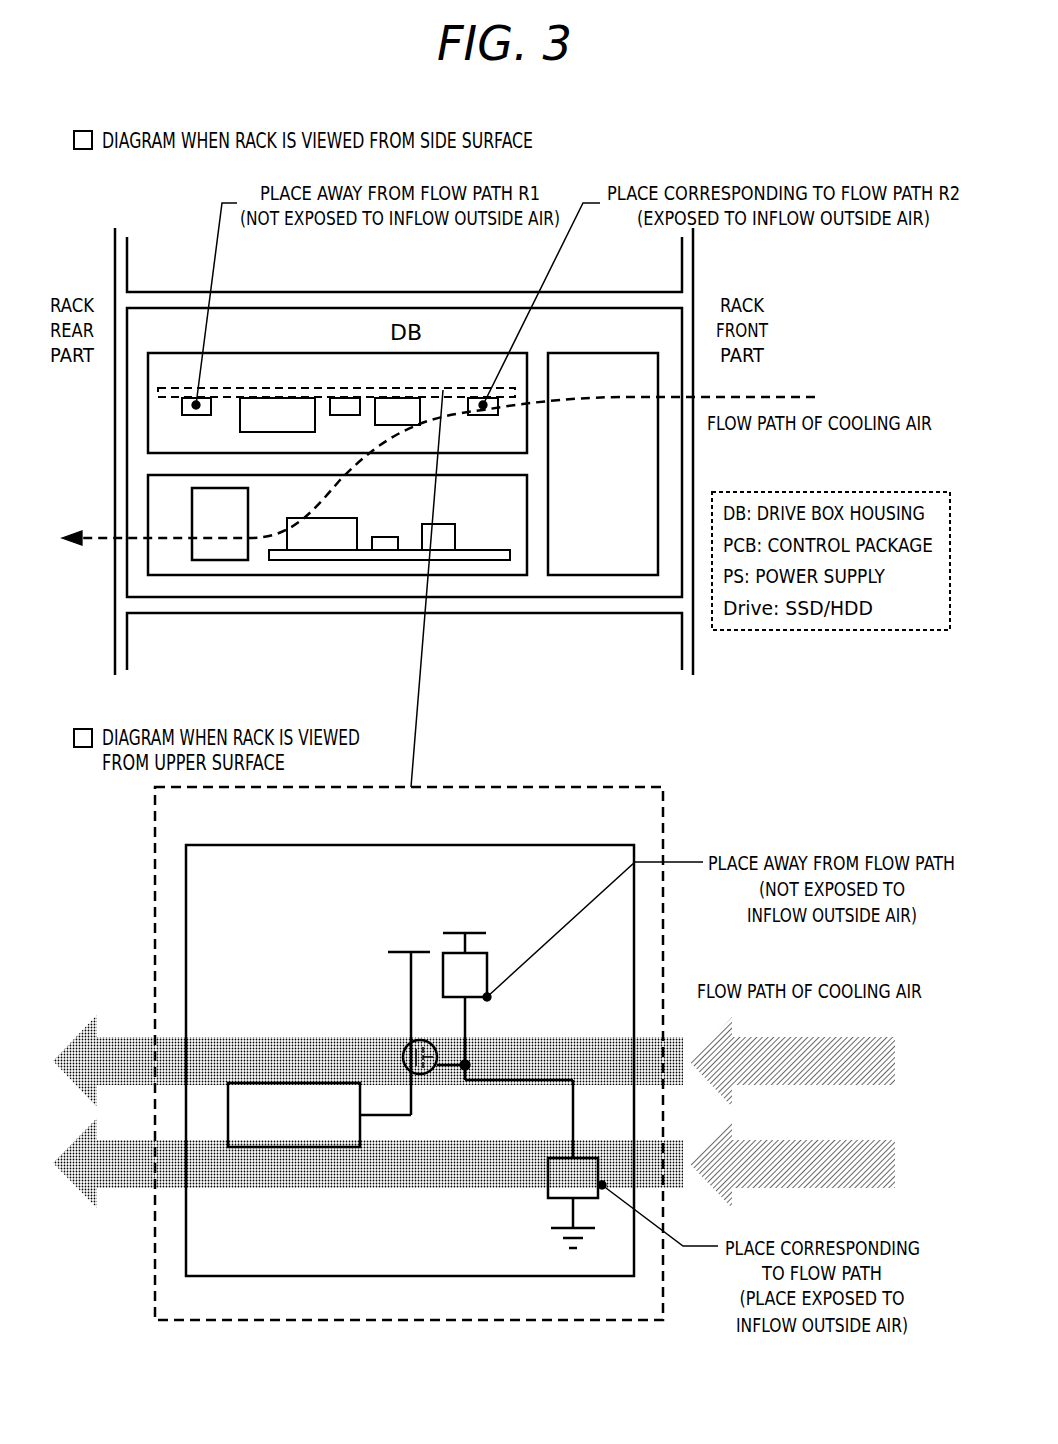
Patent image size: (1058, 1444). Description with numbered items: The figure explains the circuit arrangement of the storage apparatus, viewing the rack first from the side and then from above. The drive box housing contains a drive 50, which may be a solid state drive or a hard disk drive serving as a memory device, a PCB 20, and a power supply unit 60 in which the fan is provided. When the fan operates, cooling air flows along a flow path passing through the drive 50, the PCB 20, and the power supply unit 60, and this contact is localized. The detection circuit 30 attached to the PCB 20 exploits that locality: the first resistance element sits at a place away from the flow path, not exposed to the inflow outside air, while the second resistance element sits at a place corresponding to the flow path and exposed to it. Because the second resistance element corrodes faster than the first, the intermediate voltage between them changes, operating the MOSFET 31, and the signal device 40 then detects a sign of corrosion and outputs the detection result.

The printed circuit board (PCB) 20 is at (147, 398).
The detection circuit 30 is at (580, 845).
The MOSFET 31 is at (405, 1045).
The signal device 40 is at (243, 1083).
The drive 50 is at (596, 352).
The power supply unit 60 is at (147, 495).